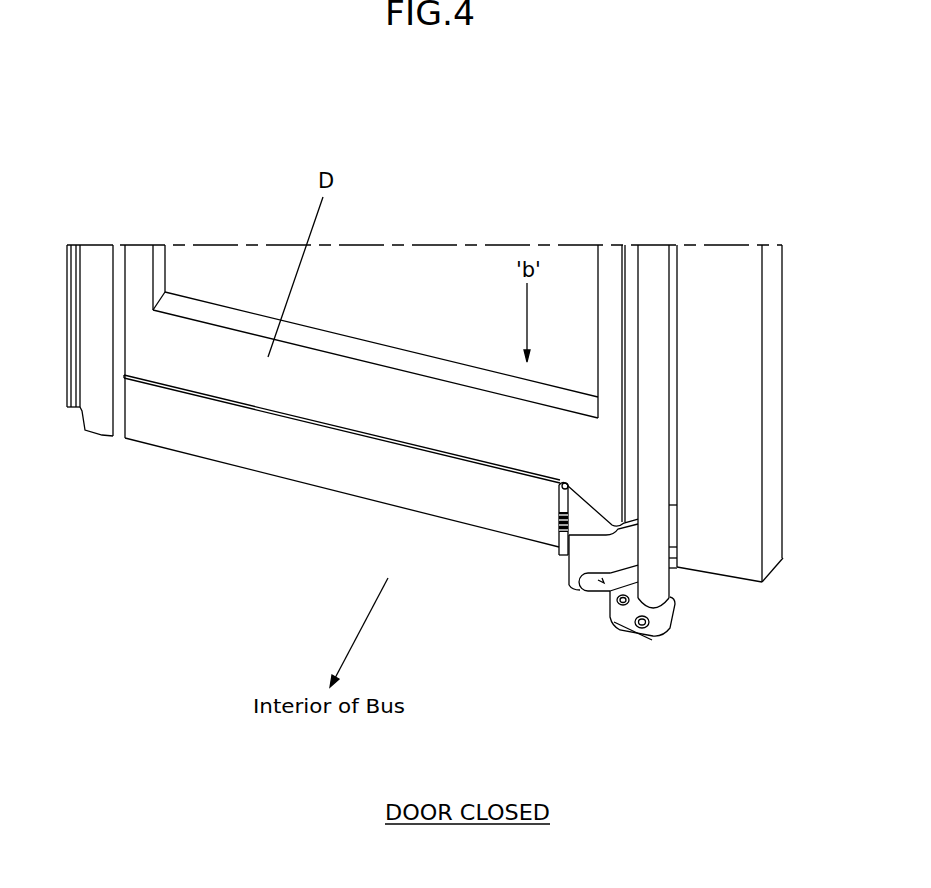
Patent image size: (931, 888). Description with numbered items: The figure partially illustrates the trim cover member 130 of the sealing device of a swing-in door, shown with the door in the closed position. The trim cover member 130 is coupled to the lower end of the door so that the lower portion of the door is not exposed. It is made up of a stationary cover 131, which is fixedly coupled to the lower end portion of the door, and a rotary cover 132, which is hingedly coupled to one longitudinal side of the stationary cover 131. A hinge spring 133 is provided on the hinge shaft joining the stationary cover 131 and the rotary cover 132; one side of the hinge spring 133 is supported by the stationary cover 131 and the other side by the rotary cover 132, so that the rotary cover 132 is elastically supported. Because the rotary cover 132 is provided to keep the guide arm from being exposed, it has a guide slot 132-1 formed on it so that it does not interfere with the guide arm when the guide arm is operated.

The trim cover member 130 is at (236, 484).
The stationary cover 131 is at (342, 473).
The rotary cover 132 is at (592, 553).
The guide slot 132-1 is at (597, 588).
The hinge spring 133 is at (556, 524).